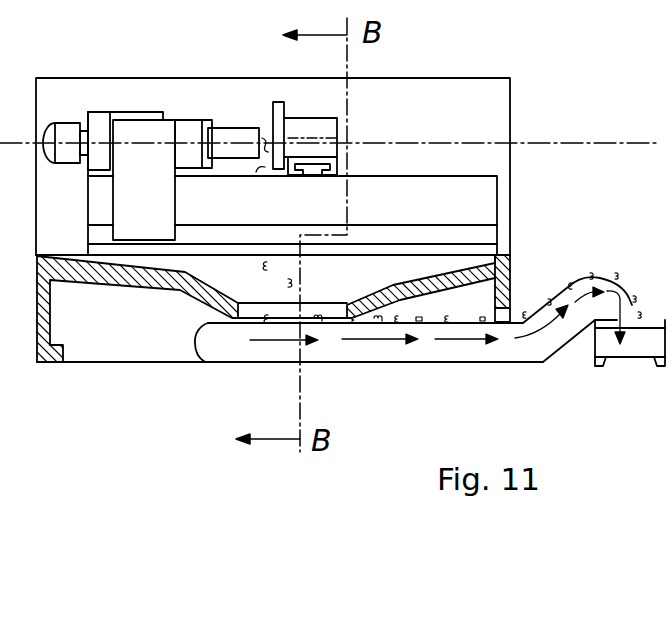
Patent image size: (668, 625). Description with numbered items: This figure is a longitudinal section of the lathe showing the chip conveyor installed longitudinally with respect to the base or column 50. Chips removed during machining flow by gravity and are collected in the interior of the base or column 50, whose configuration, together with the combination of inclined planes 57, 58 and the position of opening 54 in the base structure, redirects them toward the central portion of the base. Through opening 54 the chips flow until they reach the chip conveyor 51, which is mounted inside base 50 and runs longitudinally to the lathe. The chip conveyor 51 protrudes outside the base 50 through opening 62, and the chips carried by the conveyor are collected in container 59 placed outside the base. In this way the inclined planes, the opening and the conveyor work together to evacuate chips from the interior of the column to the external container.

The base or column 50 is at (52, 357).
The chip conveyor 51 is at (600, 285).
The opening 54 is at (321, 318).
The inclined plane 57 is at (207, 277).
The inclined plane 58 is at (363, 263).
The container 59 is at (635, 347).
The opening 62 is at (508, 318).